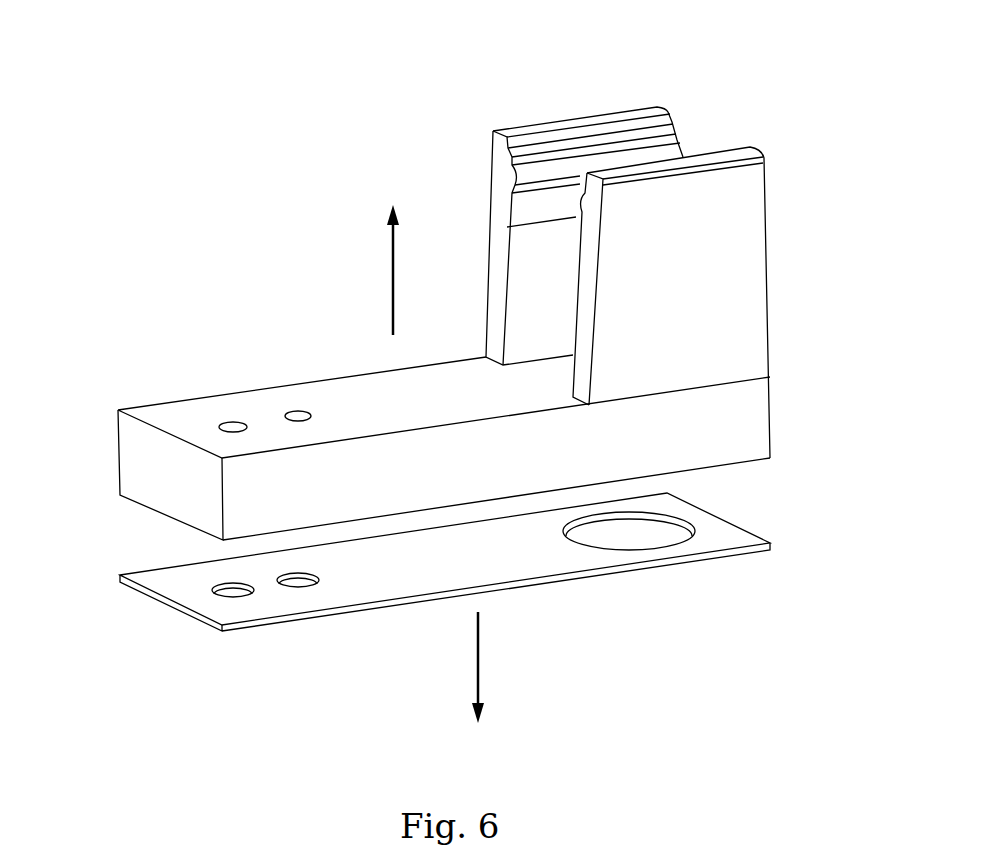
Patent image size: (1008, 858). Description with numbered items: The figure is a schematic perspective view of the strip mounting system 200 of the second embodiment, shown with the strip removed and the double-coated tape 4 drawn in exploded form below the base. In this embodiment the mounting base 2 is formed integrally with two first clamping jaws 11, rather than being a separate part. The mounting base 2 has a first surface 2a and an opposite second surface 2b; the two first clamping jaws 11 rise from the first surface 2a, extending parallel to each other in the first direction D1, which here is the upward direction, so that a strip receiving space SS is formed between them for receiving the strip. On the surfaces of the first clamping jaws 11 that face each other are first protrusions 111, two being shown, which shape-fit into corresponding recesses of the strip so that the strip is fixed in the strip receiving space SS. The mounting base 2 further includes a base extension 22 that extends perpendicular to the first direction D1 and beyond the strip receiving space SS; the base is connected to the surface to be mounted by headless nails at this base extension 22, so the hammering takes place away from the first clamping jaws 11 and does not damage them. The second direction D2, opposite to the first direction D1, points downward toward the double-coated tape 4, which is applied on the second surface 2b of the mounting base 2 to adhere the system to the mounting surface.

The strip mounting system 200 is at (740, 75).
The mounting base 2 is at (680, 443).
The first surface 2a is at (541, 385).
The second surface 2b is at (660, 473).
The base extension 22 is at (167, 477).
The first clamping jaws 11 is at (493, 273).
The first protrusion 111 is at (577, 204).
The strip receiving space SS is at (538, 283).
The double-coated tape 4 is at (545, 580).
The first direction D1 is at (378, 270).
The second direction D2 is at (461, 667).